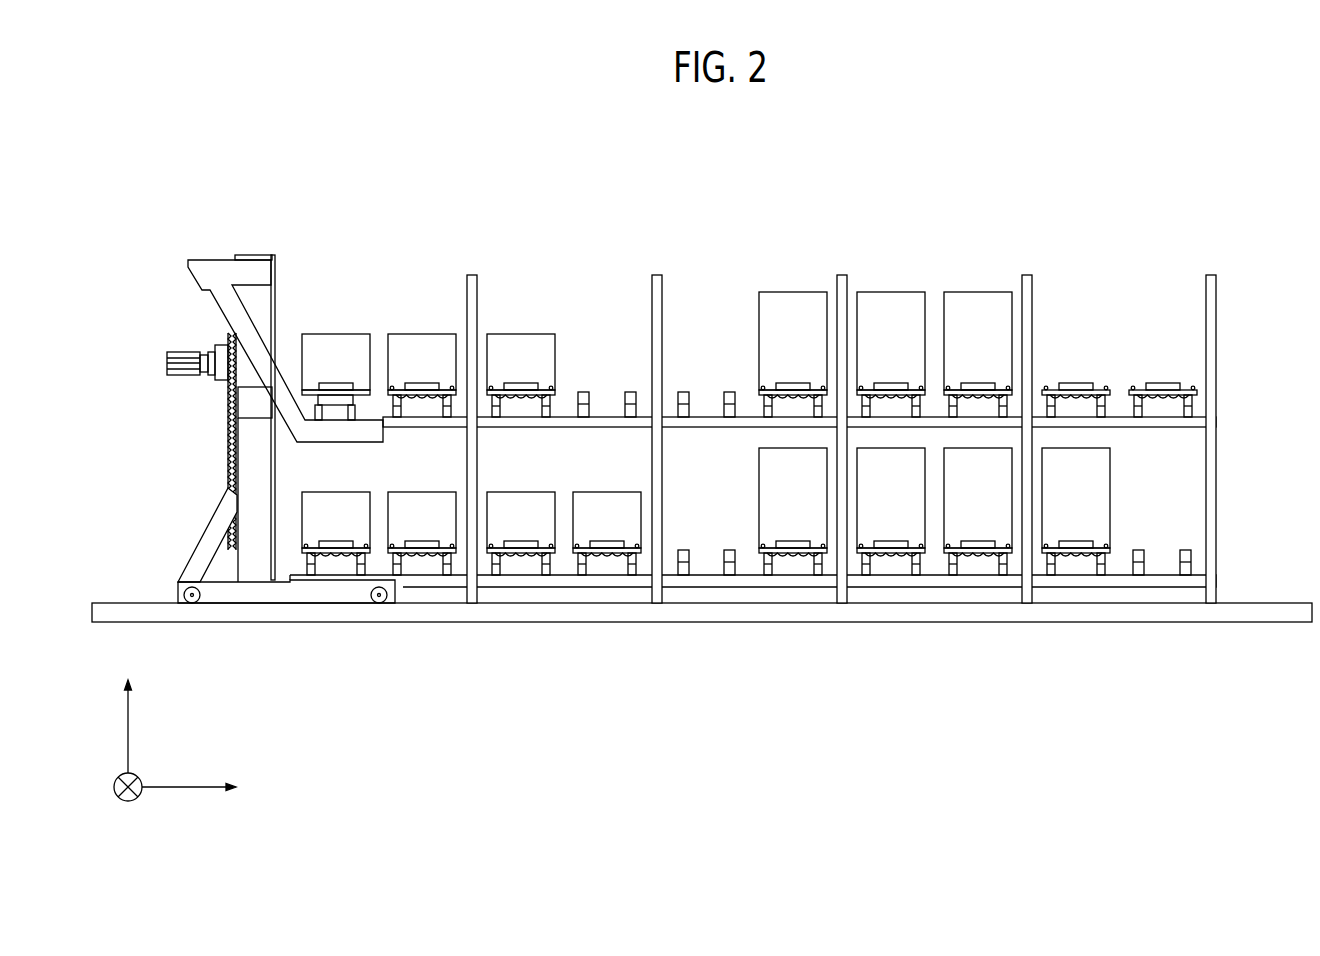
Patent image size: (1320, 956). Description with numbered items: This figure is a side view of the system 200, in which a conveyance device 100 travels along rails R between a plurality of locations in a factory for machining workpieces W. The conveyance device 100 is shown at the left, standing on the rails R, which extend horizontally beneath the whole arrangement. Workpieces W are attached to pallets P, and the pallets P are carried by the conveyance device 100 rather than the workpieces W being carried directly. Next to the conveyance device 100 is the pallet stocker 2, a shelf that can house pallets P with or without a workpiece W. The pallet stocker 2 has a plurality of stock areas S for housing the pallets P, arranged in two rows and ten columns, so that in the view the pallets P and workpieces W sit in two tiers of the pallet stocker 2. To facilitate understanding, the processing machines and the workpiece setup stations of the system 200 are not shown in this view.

The system 200 is at (137, 138).
The conveyance device 100 is at (250, 246).
The pallet stocker 2 is at (765, 430).
The workpiece W is at (426, 354).
The pallet P is at (318, 398).
The stock area S is at (1160, 578).
The rail R is at (771, 612).